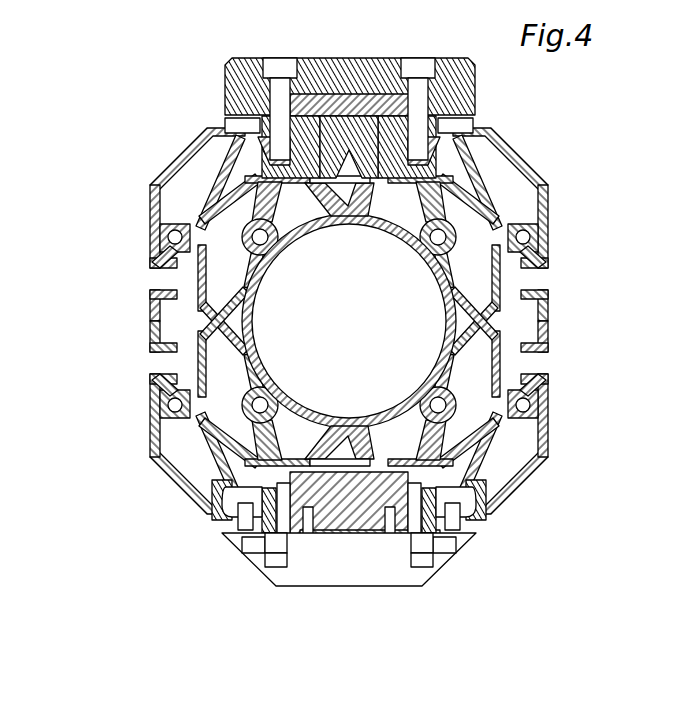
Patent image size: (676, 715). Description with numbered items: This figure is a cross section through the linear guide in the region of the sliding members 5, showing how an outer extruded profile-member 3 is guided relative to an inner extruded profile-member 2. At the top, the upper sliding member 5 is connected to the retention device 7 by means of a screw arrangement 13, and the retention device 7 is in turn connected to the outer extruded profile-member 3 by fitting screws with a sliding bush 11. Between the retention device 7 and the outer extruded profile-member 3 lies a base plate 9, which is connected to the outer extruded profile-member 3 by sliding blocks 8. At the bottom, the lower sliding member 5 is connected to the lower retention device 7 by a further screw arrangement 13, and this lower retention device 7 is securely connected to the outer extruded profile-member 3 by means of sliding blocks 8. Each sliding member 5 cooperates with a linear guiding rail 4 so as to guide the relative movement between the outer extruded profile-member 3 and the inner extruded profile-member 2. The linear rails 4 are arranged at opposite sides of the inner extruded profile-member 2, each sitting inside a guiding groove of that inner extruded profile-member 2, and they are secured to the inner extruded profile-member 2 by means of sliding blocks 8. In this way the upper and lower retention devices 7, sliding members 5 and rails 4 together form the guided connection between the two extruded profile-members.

The inner extruded profile-member 2 is at (384, 313).
The outer extruded profile-member 3 is at (552, 215).
The linear guiding rail 4 is at (360, 633).
The sliding member 5 is at (360, 68).
The retention device 7 is at (426, 58).
The sliding block 8 is at (294, 66).
The base plate 9 is at (397, 490).
The sliding bush 11 is at (275, 70).
The screw arrangement 13 is at (400, 545).